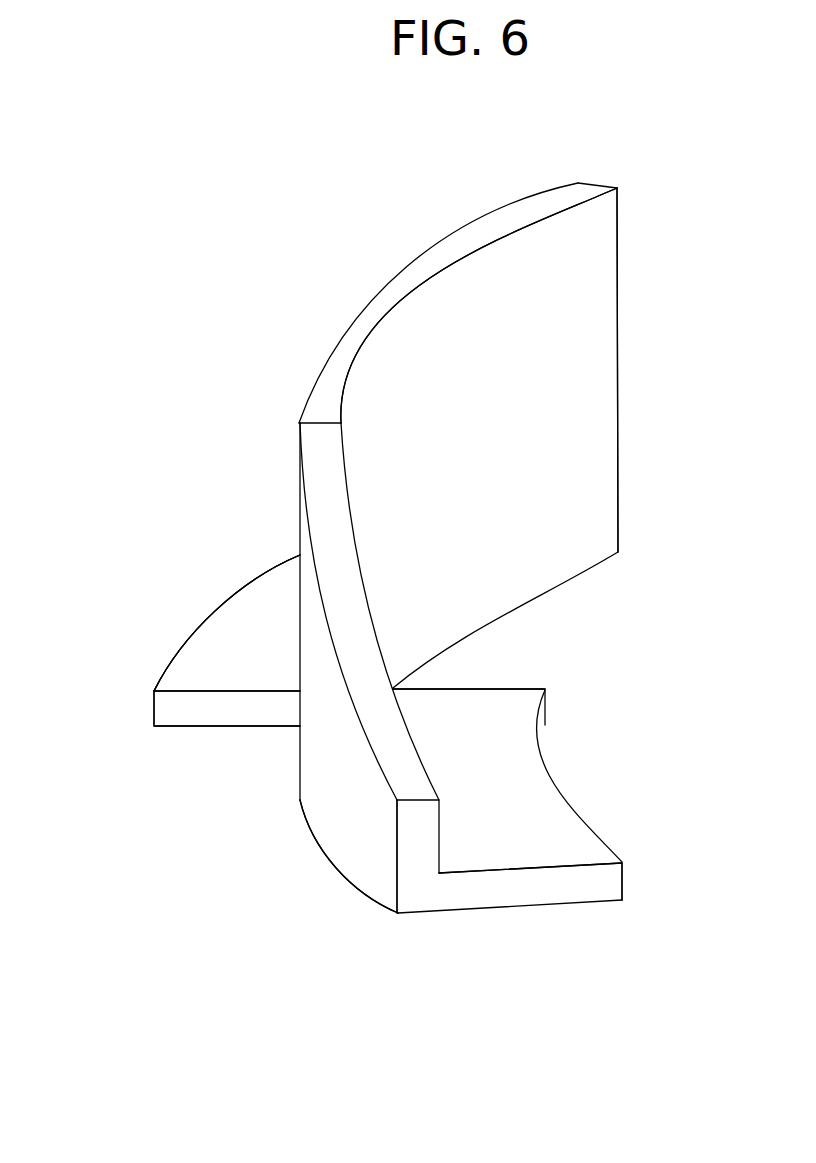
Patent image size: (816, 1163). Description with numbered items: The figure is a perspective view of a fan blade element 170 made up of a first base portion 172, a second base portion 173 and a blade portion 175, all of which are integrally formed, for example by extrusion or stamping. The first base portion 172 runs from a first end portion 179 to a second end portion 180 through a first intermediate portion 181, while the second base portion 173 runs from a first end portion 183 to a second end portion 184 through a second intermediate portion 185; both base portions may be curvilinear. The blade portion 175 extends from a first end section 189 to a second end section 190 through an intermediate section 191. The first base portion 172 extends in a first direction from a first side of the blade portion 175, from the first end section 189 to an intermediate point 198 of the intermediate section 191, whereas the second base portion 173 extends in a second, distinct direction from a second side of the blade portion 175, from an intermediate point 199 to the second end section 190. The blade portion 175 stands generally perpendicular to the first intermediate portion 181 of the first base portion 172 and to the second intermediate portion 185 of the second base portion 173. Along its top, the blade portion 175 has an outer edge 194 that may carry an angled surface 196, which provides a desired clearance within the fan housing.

The fan blade element 170 is at (205, 360).
The first base portion 172 is at (162, 667).
The second base portion 173 is at (525, 893).
The blade portion 175 is at (533, 420).
The first end portion 179 is at (258, 575).
The second end portion 180 is at (322, 777).
The first intermediate portion 181 is at (210, 658).
The first end portion 183 is at (398, 913).
The second end portion 184 is at (623, 878).
The second intermediate portion 185 is at (530, 787).
The first end section 189 is at (618, 255).
The second end section 190 is at (413, 840).
The intermediate section 191 is at (402, 338).
The outer edge 194 is at (438, 257).
The angled surface 196 is at (367, 692).
The intermediate point 198 is at (300, 668).
The intermediate point 199 is at (393, 685).